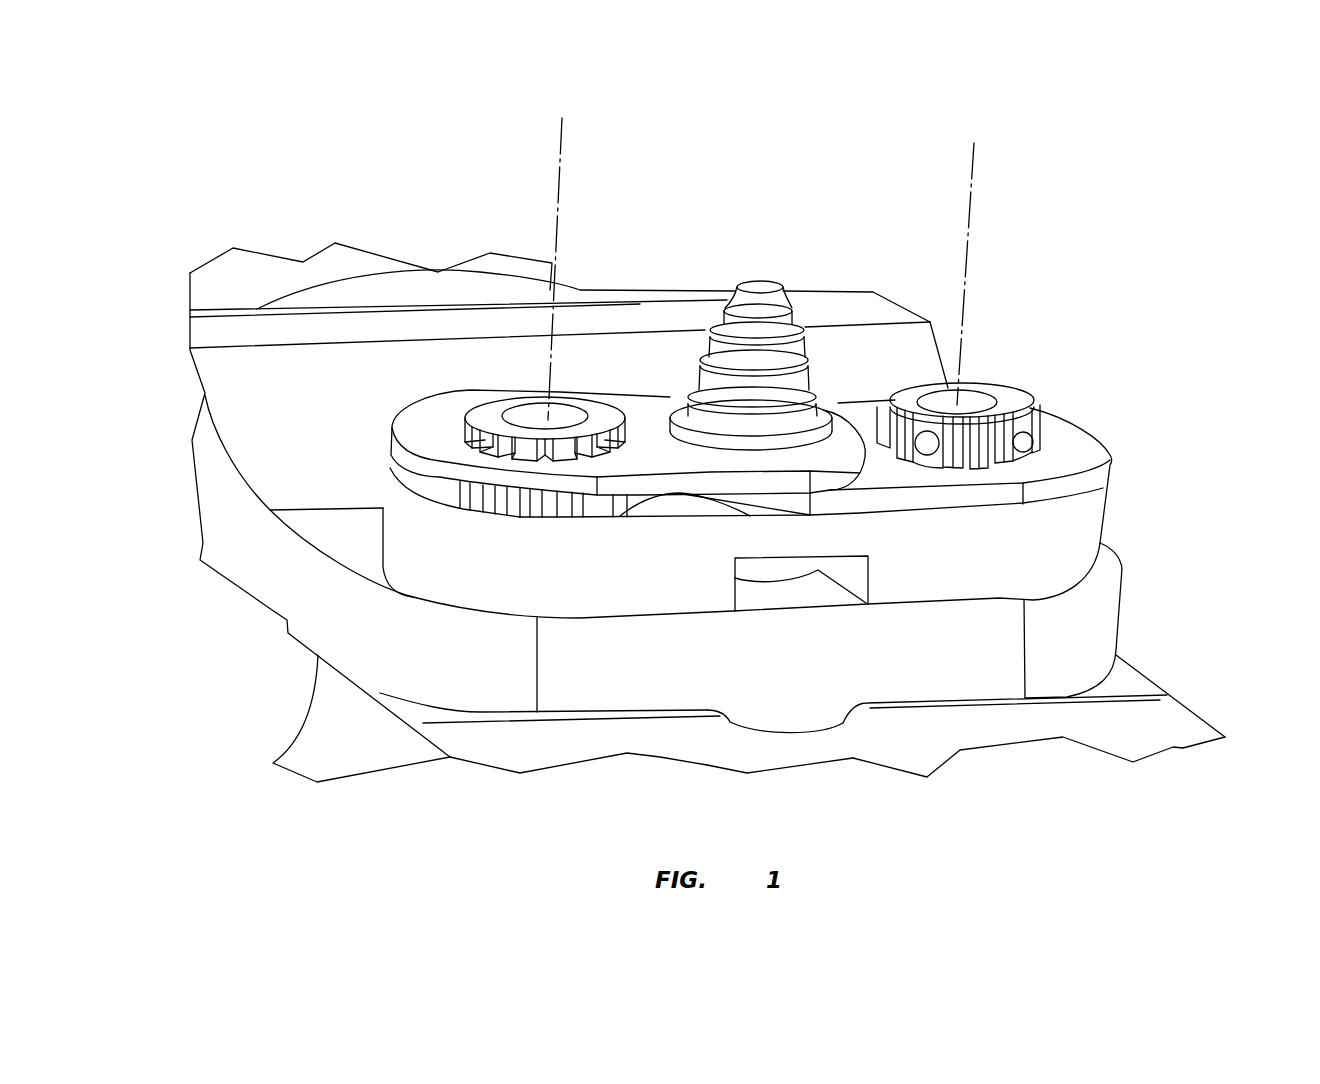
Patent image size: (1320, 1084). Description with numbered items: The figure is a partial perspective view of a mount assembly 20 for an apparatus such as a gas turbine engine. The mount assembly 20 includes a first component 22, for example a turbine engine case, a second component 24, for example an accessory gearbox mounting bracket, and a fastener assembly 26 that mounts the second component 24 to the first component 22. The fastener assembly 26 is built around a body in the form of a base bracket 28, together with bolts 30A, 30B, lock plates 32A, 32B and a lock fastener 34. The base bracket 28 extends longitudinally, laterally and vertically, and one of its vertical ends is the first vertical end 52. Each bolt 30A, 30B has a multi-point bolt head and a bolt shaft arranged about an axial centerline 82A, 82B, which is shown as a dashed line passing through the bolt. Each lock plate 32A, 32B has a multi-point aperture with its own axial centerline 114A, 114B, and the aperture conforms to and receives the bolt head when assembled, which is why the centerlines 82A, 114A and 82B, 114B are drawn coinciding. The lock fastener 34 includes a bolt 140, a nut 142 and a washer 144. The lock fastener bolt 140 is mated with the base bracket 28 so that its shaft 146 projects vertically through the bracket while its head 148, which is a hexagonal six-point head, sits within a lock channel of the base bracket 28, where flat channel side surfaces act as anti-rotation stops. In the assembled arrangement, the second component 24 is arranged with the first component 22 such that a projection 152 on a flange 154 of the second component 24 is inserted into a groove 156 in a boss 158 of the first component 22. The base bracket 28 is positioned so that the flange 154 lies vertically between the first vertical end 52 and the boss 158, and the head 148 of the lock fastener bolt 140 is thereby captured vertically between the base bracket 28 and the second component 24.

The mount assembly 20 is at (1162, 268).
The first component 22 is at (1183, 676).
The second component 24 is at (218, 510).
The fastener assembly 26 is at (973, 363).
The base bracket 28 is at (628, 626).
The bolt 30A is at (1010, 390).
The bolt 30B is at (492, 404).
The lock plate 32A is at (1087, 423).
The lock plate 32B is at (403, 412).
The lock fastener 34 is at (770, 130).
The first vertical end 52 is at (1083, 620).
The axial centerline 82A is at (977, 152).
The axial centerline 82B is at (560, 121).
The axial centerline 114A is at (965, 274).
The axial centerline 114B is at (555, 269).
The bolt 140 is at (747, 284).
The nut 142 is at (703, 365).
The washer 144 is at (680, 410).
The shaft 146 is at (793, 310).
The head 148 is at (768, 597).
The projection 152 is at (790, 723).
The flange 154 is at (500, 683).
The groove 156 is at (855, 712).
The boss 158 is at (1107, 730).